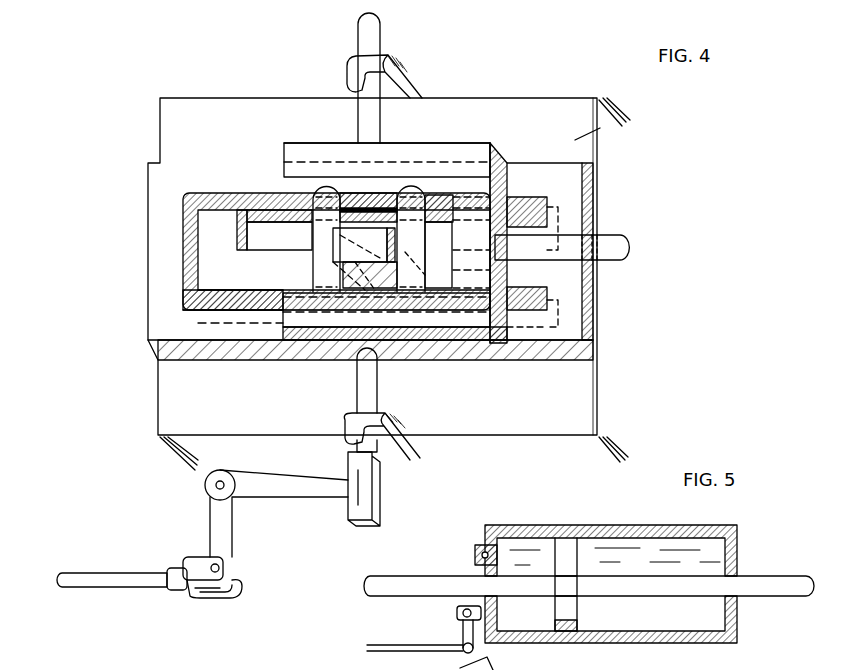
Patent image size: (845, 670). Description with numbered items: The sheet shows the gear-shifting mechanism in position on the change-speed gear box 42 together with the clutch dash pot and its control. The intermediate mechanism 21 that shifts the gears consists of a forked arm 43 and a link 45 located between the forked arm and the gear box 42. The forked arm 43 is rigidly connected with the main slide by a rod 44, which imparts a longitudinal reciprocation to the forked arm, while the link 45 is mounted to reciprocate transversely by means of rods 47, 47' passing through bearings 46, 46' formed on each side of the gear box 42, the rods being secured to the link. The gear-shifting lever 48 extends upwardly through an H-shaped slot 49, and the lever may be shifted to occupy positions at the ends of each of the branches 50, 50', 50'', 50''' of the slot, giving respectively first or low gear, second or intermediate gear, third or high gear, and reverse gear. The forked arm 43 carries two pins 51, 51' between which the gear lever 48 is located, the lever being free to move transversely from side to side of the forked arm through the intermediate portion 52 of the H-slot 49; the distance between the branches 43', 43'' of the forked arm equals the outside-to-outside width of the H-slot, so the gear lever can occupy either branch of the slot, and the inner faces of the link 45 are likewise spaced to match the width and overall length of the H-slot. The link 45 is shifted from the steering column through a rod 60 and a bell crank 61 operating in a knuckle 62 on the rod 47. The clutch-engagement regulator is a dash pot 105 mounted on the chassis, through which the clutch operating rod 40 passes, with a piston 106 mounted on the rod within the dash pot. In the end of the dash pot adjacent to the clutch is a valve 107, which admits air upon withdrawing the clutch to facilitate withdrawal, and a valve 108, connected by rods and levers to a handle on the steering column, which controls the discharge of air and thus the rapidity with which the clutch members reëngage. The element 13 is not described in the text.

In FIG. 4, the valve body 13 is at (449, 150).
In FIG. 4, the intermediate mechanism 21 is at (600, 128).
In FIG. 5, the clutch operating rod 40 is at (773, 598).
In FIG. 4, the gear box 42 is at (507, 437).
In FIG. 4, the forked arm 43 is at (498, 243).
In FIG. 4, the branch of the forked arm 43' is at (387, 143).
In FIG. 4, the branch of the forked arm 43'' is at (352, 343).
In FIG. 4, the rod 44 is at (610, 236).
In FIG. 4, the link 45 is at (165, 315).
In FIG. 4, the bearing 46 is at (384, 456).
In FIG. 4, the bearing 46' is at (388, 65).
In FIG. 4, the rod 47 is at (384, 400).
In FIG. 4, the rod 47' is at (387, 78).
In FIG. 4, the gear-shifting lever 48 is at (373, 252).
In FIG. 4, the H-shaped slot 49 is at (268, 303).
In FIG. 4, the branch of the slot 50 is at (233, 350).
In FIG. 4, the branch of the slot 50' is at (590, 209).
In FIG. 4, the branch of the slot 50'' is at (204, 234).
In FIG. 4, the branch of the slot 50''' is at (580, 307).
In FIG. 4, the pin 51 is at (335, 259).
In FIG. 4, the pin 51' is at (453, 241).
In FIG. 4, the intermediate portion of the H-slot 52 is at (430, 271).
In FIG. 4, the rod 60 is at (115, 578).
In FIG. 4, the bell crank 61 is at (270, 487).
In FIG. 4, the knuckle 62 is at (350, 497).
In FIG. 5, the dash pot 105 is at (735, 545).
In FIG. 5, the piston 106 is at (585, 538).
In FIG. 5, the valve 107 is at (472, 550).
In FIG. 5, the valve 108 is at (457, 611).